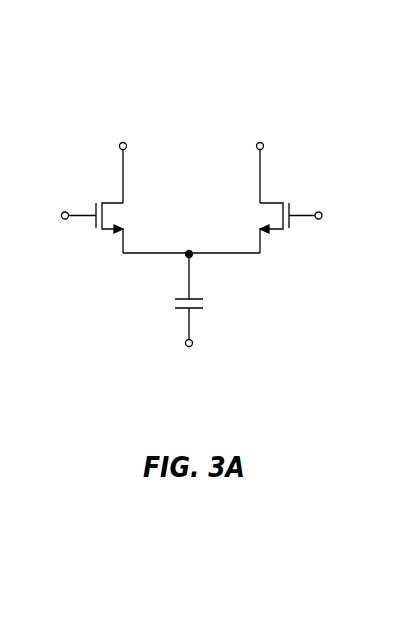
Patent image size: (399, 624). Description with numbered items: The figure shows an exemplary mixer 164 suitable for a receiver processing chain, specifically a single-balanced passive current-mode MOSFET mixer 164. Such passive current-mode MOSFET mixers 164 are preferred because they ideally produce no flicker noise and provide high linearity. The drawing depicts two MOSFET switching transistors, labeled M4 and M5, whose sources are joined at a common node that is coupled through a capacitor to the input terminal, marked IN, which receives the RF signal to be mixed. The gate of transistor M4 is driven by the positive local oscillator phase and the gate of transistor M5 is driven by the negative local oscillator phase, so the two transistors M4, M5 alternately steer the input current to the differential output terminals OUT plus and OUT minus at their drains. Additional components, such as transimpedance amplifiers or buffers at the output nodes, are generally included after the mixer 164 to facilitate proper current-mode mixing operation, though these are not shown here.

The mixer 164 is at (218, 68).
The transistor M4 is at (110, 228).
The transistor M5 is at (271, 228).